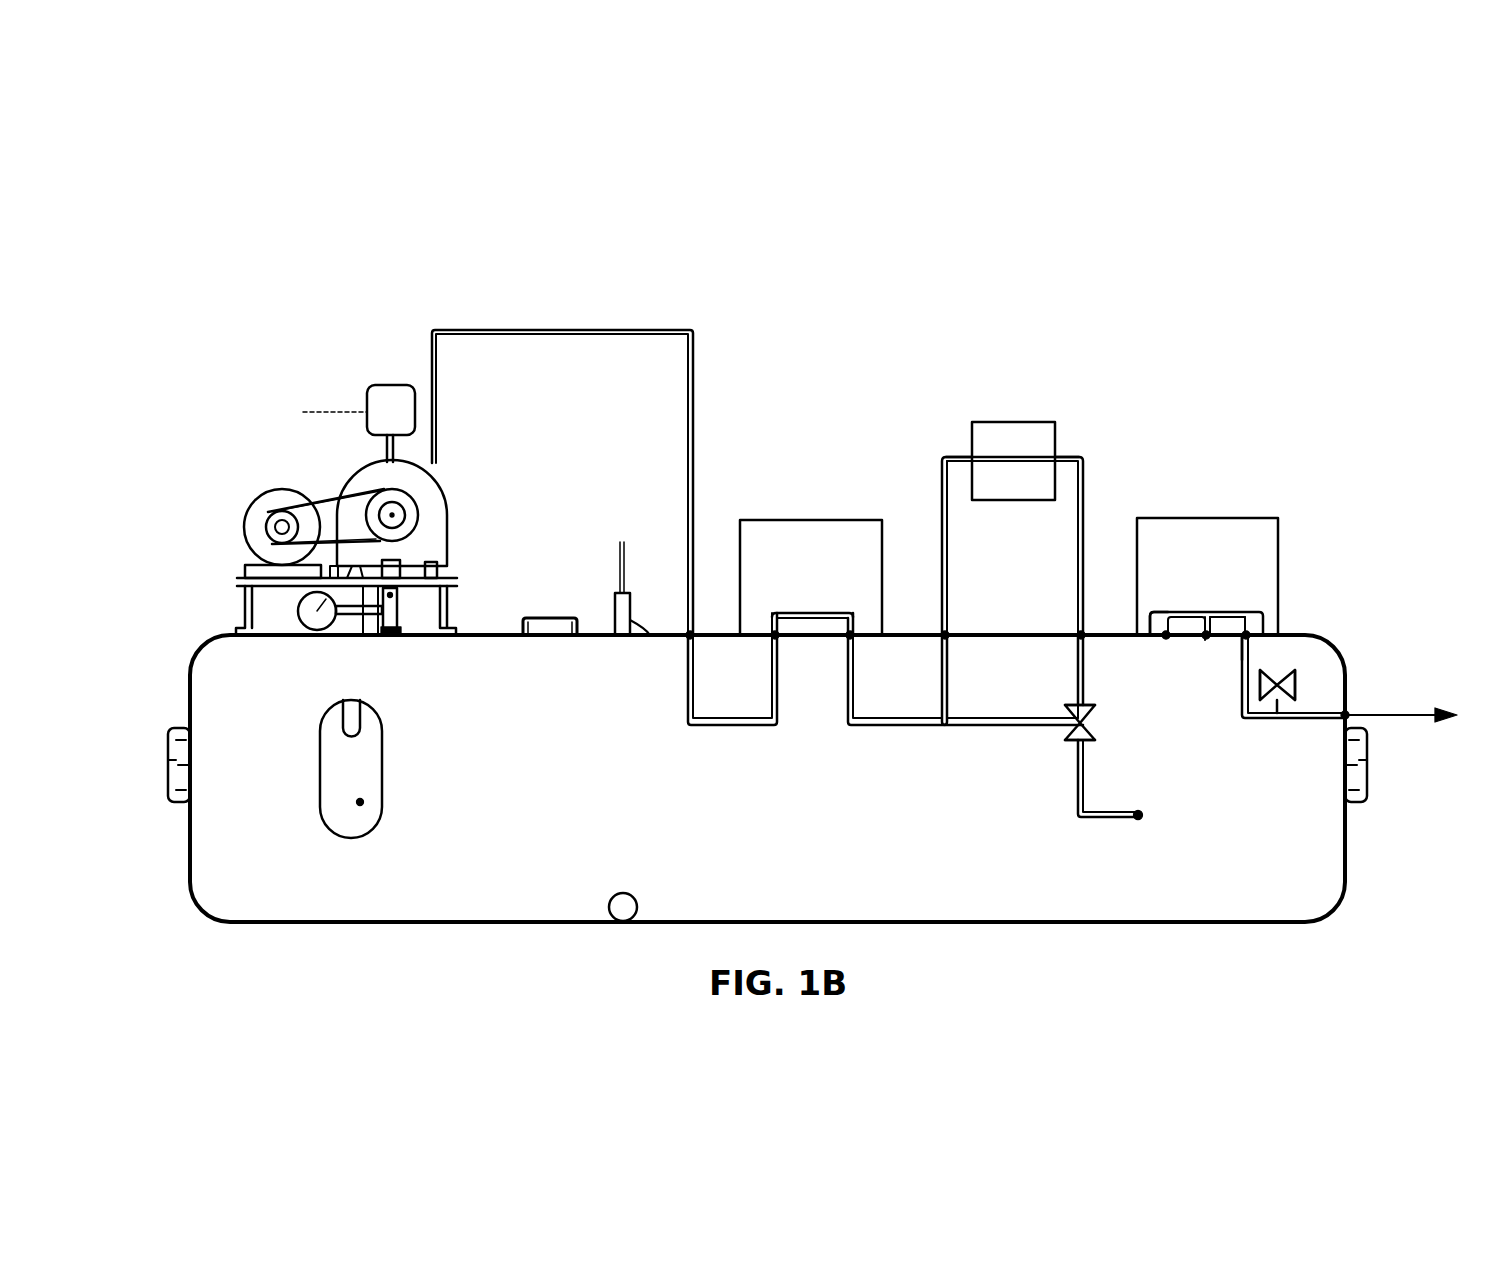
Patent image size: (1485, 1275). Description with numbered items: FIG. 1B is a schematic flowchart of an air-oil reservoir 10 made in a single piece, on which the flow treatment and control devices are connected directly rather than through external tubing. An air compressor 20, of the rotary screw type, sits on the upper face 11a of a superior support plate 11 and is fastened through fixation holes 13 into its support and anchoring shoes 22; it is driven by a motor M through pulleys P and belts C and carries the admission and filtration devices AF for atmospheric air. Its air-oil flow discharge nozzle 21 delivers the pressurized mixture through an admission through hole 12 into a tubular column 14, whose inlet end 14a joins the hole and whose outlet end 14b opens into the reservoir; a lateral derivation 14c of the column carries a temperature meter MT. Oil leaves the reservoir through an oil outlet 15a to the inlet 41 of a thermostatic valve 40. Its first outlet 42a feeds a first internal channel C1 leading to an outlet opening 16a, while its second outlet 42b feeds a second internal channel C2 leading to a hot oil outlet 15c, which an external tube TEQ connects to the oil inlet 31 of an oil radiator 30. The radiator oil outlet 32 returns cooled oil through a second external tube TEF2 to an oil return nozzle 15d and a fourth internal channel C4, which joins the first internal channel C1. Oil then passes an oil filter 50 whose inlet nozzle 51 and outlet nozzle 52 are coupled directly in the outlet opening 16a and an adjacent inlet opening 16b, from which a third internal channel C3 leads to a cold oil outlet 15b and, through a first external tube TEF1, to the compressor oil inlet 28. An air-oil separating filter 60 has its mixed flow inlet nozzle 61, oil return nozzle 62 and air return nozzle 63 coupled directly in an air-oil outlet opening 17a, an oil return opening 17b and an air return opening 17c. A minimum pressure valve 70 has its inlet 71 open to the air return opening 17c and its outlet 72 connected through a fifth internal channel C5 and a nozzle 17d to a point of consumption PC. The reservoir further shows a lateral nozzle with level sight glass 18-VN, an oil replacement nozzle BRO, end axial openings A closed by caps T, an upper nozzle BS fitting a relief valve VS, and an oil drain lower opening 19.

The air-oil reservoir 10 is at (1355, 880).
The support plate 11 is at (228, 572).
The upper face 11a is at (355, 510).
The admission through hole 12 is at (447, 585).
The fixation holes 13 is at (380, 640).
The tubular column 14 is at (405, 614).
The inlet end 14a is at (396, 640).
The outlet end 14b is at (412, 600).
The lateral derivation 14c is at (362, 640).
The oil outlet 15a is at (1132, 822).
The cold oil outlet 15b is at (686, 642).
The hot oil outlet 15c is at (1078, 630).
The oil return nozzle 15d is at (942, 631).
The outlet opening 16a is at (855, 642).
The inlet opening 16b is at (780, 642).
The air-oil outlet opening 17a is at (1165, 645).
The oil return opening 17b is at (1205, 645).
The air return opening 17c is at (1250, 648).
The nozzle 17d is at (1350, 710).
The lateral nozzle with level sight glass 18-VN is at (366, 803).
The oil drain lower opening 19 is at (633, 894).
The air compressor 20 is at (447, 500).
The air-oil flow discharge nozzle 21 is at (395, 560).
The support and anchoring shoes 22 is at (425, 586).
The oil inlet 28 is at (440, 461).
The oil radiator 30 is at (1013, 420).
The oil inlet 31 is at (1063, 455).
The oil outlet 32 is at (966, 455).
The thermostatic valve 40 is at (1097, 727).
The inlet 41 is at (1092, 750).
The first outlet 42a is at (1068, 732).
The second outlet 42b is at (1082, 704).
The oil filter 50 is at (805, 519).
The inlet nozzle 51 is at (848, 612).
The outlet nozzle 52 is at (764, 612).
The air-oil separating filter 60 is at (1217, 517).
The mixed flow inlet nozzle 61 is at (1156, 624).
The oil return nozzle 62 is at (1200, 624).
The air return nozzle 63 is at (1262, 630).
The minimum pressure valve 70 is at (1300, 680).
The inlet 71 is at (1260, 690).
The outlet 72 is at (1278, 713).
The motor M is at (241, 571).
The pulleys P is at (271, 511).
The belts C is at (340, 500).
The admission and filtration devices AF is at (389, 383).
The first external tube TEF1 is at (576, 328).
The second external tube TEF2 is at (945, 535).
The external tube TEQ is at (1088, 520).
The relief valve VS is at (632, 556).
The upper nozzle BS is at (658, 640).
The oil replacement nozzle BRO is at (554, 616).
The temperature meter MT is at (302, 630).
The caps T is at (172, 750).
The end axial openings A is at (170, 788).
The point of consumption PC is at (1439, 729).
The first internal channel C1 is at (1000, 732).
The second internal channel C2 is at (1068, 678).
The third internal channel C3 is at (738, 728).
The fourth internal channel C4 is at (950, 690).
The fifth internal channel C5 is at (1310, 690).